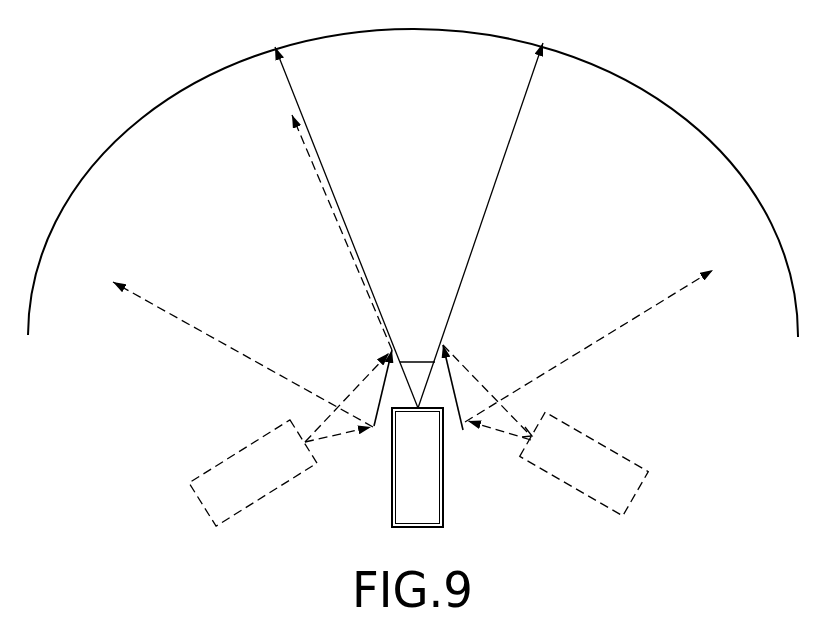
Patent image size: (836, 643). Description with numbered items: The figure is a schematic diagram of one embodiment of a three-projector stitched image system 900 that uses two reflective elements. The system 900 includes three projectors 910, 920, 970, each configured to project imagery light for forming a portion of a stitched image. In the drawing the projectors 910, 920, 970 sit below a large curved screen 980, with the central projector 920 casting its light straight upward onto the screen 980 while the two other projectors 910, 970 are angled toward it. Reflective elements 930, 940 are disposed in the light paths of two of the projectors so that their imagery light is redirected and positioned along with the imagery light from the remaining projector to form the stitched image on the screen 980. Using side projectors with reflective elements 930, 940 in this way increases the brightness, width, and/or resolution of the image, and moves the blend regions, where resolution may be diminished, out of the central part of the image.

The system 900 is at (146, 578).
The projector 910 is at (244, 499).
The projector 920 is at (437, 515).
The reflective element 930 is at (373, 427).
The reflective element 940 is at (460, 413).
The projector 970 is at (632, 489).
The screen 980 is at (694, 122).